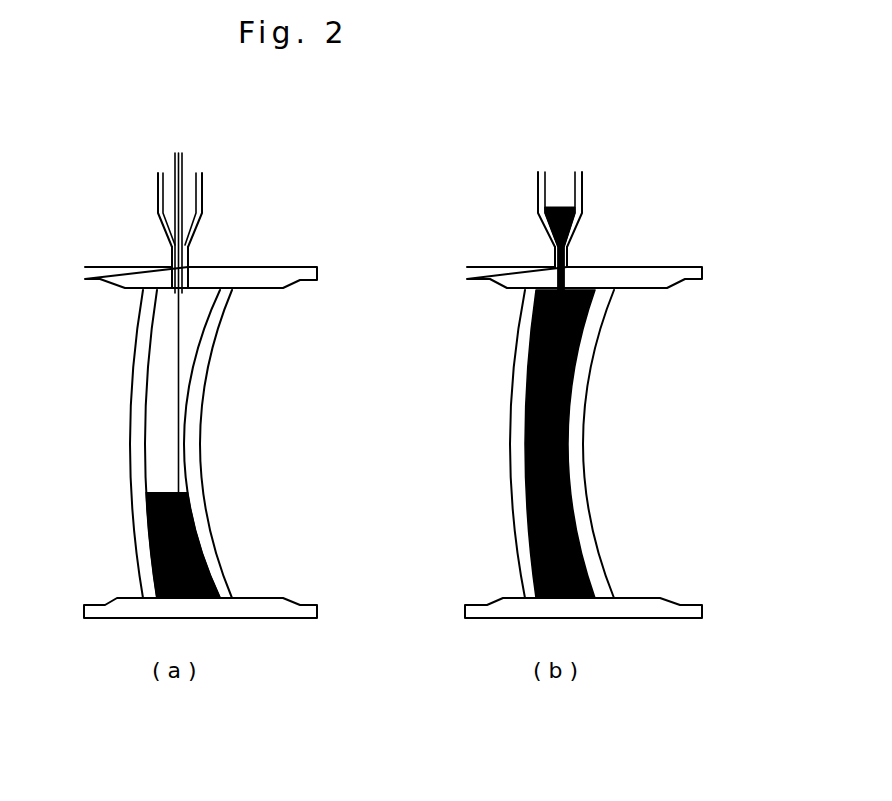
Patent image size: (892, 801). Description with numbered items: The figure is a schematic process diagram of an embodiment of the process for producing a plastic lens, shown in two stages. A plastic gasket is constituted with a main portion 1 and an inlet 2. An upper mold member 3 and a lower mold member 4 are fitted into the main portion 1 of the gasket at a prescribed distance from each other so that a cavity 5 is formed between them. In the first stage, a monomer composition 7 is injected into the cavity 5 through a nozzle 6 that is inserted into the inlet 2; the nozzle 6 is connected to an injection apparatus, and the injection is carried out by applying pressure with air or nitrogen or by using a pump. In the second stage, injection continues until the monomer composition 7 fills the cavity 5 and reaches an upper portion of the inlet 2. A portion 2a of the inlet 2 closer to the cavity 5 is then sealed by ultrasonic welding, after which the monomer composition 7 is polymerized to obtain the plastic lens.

The main portion 1 is at (280, 288).
The inlet 2 is at (202, 197).
The portion of the inlet 2a is at (188, 253).
The upper mold member 3 is at (140, 359).
The lower mold member 4 is at (198, 388).
The cavity 5 is at (163, 444).
The nozzle 6 is at (183, 226).
The monomer composition 7 is at (193, 533).